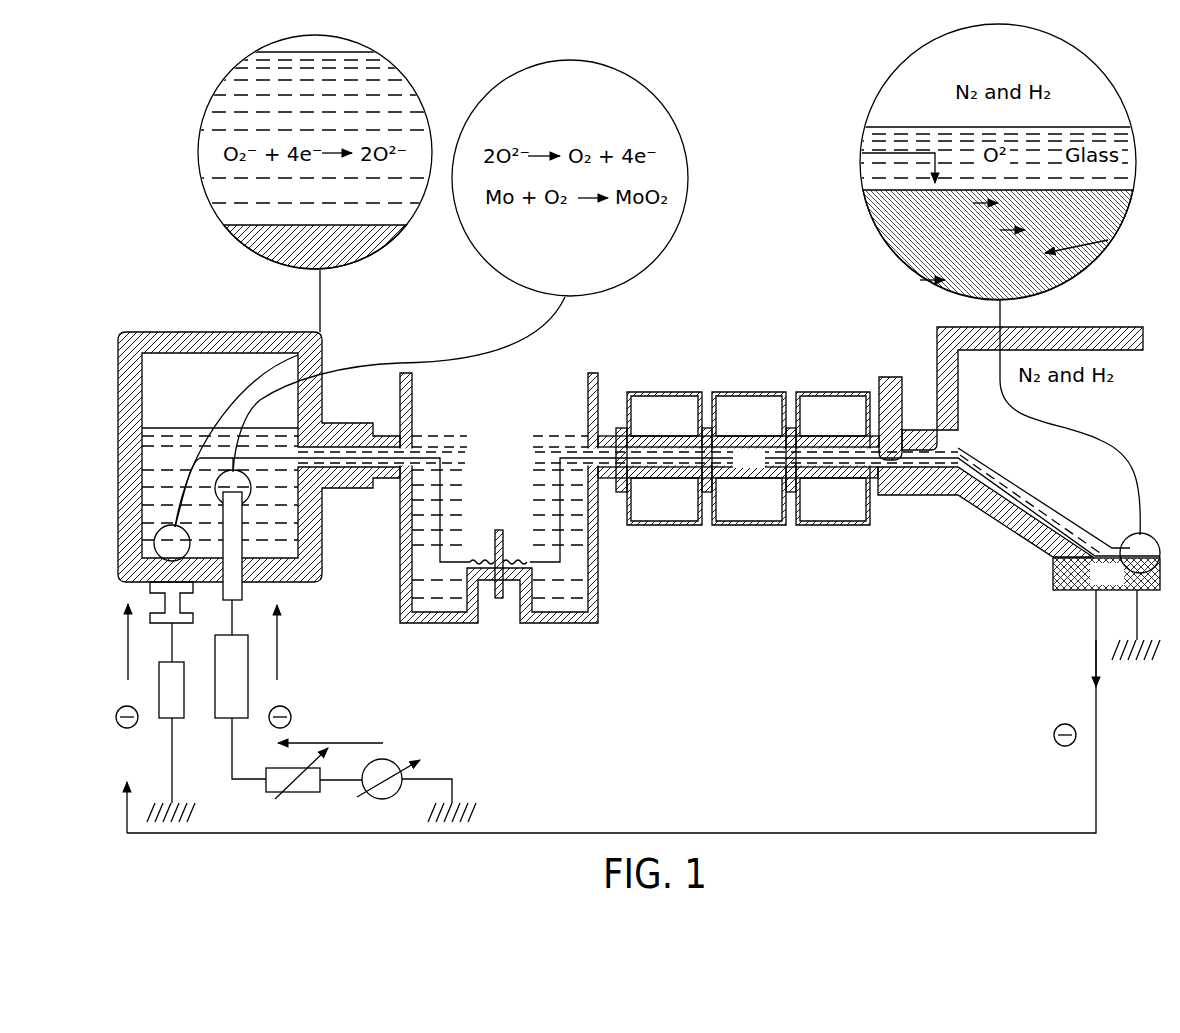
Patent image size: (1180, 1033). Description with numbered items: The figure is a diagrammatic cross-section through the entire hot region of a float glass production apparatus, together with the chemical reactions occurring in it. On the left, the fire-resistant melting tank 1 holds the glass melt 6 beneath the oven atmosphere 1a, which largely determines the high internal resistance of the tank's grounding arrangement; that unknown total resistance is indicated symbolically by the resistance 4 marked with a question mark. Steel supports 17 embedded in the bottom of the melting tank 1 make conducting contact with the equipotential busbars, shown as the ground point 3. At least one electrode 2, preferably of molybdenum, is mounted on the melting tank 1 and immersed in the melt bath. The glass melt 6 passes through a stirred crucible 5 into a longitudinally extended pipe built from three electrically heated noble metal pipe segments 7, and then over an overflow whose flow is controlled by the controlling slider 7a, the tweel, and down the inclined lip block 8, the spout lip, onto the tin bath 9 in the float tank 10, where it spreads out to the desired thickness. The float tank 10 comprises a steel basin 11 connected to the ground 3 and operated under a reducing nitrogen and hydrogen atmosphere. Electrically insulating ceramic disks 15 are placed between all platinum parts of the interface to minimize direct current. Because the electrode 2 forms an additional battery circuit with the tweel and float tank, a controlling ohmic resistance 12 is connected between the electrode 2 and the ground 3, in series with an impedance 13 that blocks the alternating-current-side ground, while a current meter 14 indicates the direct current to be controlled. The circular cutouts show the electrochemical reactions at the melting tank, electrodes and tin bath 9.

The melting tank 1 is at (130, 332).
The oven atmosphere 1a is at (186, 378).
The electrode 2 is at (243, 537).
The ground point 3 is at (190, 814).
The resistance 4 is at (184, 693).
The stirred crucible 5 is at (438, 623).
The glass melt 6 is at (268, 505).
The pipe segment 7 is at (662, 525).
The controlling slider 7a is at (890, 377).
The lip block 8 is at (1003, 523).
The tin bath 9 is at (1090, 203).
The float tank 10 is at (1108, 530).
The steel basin 11 is at (1075, 592).
The ohmic resistance 12 is at (285, 767).
The impedance 13 is at (248, 678).
The current meter 14 is at (422, 760).
The disks 15 is at (621, 428).
The steel supports 17 is at (165, 603).